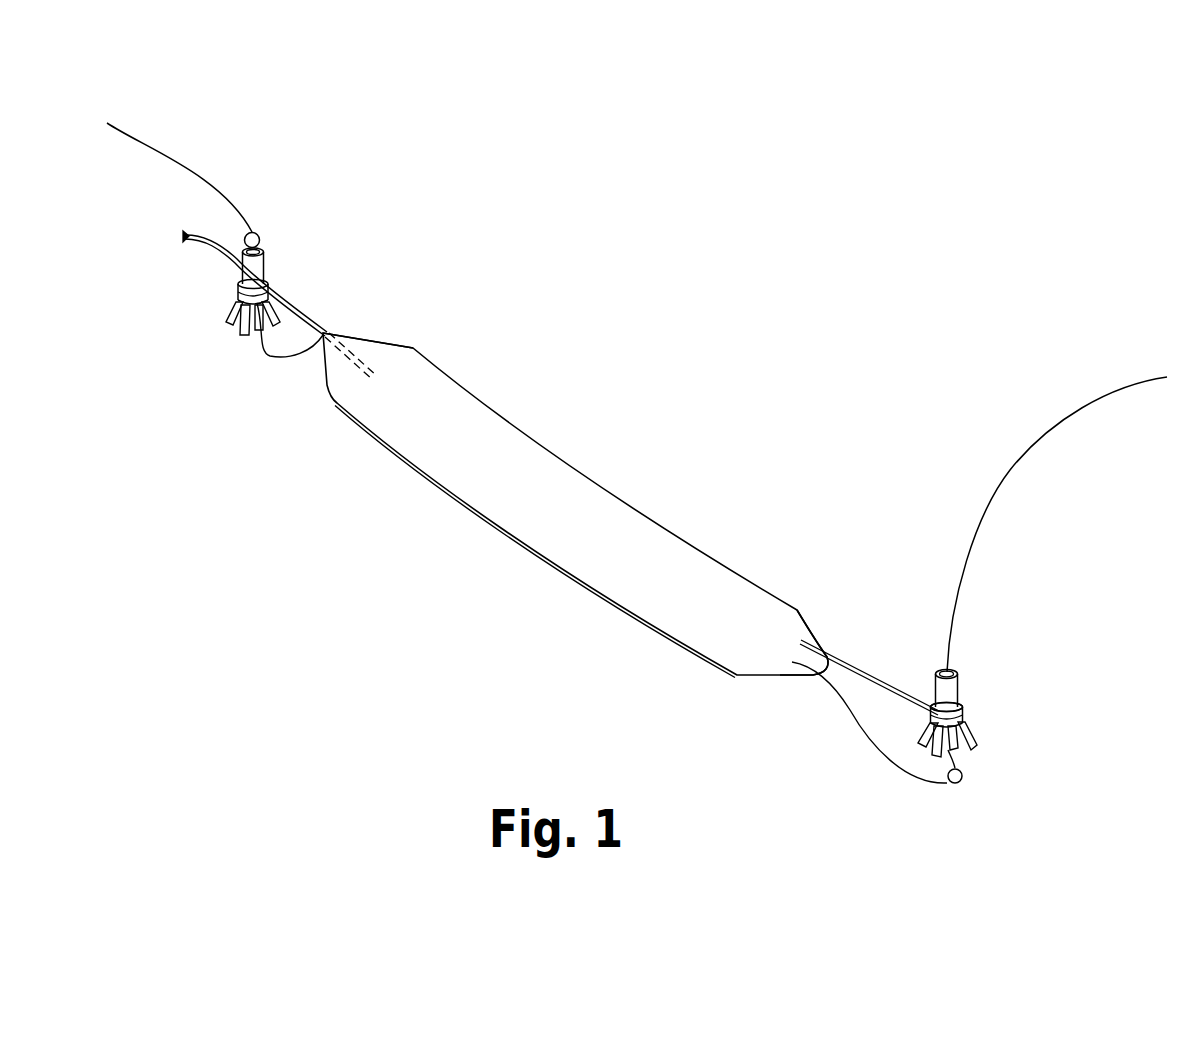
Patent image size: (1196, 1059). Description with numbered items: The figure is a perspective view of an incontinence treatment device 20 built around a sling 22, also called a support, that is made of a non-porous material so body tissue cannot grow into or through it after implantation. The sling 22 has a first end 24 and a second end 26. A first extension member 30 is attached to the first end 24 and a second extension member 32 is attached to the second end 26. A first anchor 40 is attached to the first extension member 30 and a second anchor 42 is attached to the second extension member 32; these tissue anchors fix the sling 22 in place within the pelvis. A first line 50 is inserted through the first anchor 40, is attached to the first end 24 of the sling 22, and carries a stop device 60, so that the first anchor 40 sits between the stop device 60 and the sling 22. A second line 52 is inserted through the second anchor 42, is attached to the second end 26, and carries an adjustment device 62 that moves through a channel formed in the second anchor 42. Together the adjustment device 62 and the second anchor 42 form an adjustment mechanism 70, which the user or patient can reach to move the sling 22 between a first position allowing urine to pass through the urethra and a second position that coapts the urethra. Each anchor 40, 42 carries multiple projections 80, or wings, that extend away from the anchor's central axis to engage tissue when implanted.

The incontinence treatment device 20 is at (716, 290).
The sling 22 is at (570, 468).
The first end 24 is at (352, 332).
The second end 26 is at (827, 648).
The first extension member 30 is at (318, 325).
The second extension member 32 is at (892, 688).
The first anchor 40 is at (240, 276).
The second anchor 42 is at (957, 693).
The first line 50 is at (170, 157).
The second line 52 is at (1073, 410).
The stop device 60 is at (256, 233).
The adjustment device 62 is at (962, 785).
The adjustment mechanism 70 is at (996, 725).
The projection 80 is at (240, 325).